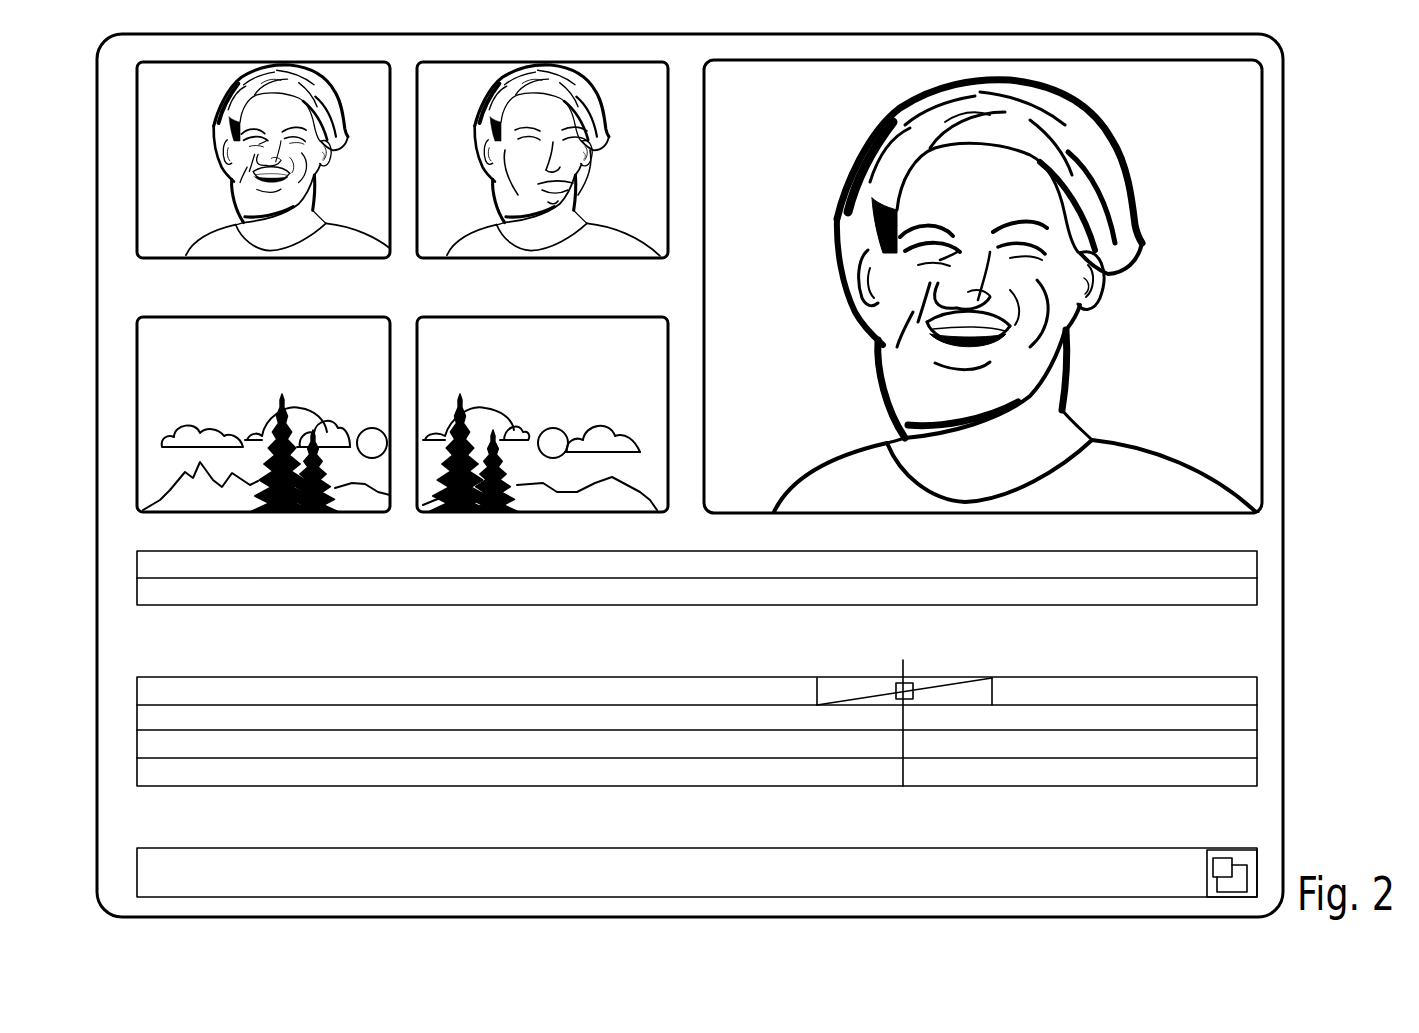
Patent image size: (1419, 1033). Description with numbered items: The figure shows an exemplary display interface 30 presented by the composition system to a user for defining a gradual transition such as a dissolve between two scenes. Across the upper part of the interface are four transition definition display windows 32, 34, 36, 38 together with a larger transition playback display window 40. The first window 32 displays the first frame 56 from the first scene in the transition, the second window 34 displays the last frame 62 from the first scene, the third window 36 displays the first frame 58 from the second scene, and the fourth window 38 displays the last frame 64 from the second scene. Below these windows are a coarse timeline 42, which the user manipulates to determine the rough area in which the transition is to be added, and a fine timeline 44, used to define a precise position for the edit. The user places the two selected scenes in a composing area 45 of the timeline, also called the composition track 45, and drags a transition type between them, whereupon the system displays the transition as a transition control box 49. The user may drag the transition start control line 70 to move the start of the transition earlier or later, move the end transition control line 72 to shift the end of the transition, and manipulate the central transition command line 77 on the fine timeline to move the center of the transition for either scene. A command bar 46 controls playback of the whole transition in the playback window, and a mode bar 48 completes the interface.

The display interface 30 is at (1295, 91).
The first transition definition display window 32 is at (268, 182).
The second transition definition display window 34 is at (542, 181).
The third transition definition display window 36 is at (263, 394).
The fourth transition definition display window 38 is at (542, 393).
The transition playback display window 40 is at (703, 240).
The coarse timeline 42 is at (1257, 598).
The fine timeline 44 is at (1260, 748).
The composing area 45 is at (1257, 695).
The command bar 46 is at (137, 568).
The mode bar 48 is at (137, 880).
The transition control box 49 is at (921, 670).
The first frame from the first scene 56 is at (175, 97).
The first frame from the second scene 58 is at (175, 350).
The last frame from the first scene 62 is at (455, 94).
The last frame from the second scene 64 is at (453, 354).
The transition start control line 70 is at (817, 690).
The end transition control line 72 is at (992, 690).
The central transition command line 77 is at (903, 668).